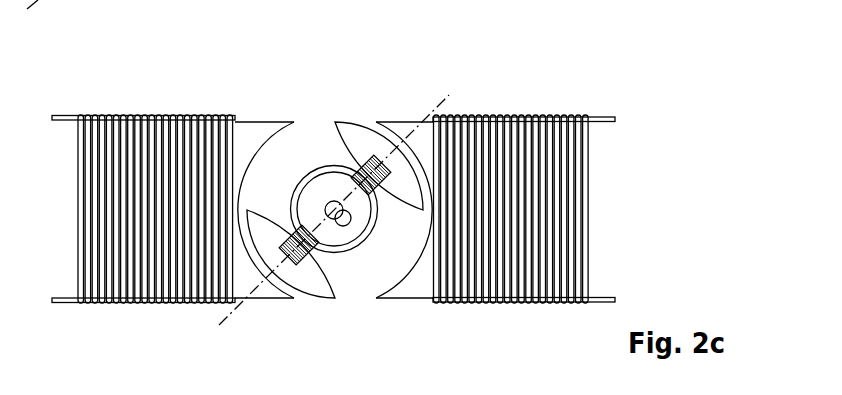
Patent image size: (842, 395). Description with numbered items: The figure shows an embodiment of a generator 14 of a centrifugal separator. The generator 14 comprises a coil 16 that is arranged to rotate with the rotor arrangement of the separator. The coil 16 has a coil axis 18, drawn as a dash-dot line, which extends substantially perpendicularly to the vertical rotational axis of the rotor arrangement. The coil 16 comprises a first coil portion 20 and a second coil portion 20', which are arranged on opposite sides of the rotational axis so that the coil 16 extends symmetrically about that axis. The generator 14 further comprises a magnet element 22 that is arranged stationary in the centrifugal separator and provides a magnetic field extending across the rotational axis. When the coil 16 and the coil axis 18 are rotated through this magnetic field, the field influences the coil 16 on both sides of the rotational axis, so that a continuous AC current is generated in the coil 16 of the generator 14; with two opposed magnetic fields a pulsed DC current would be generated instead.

The generator 14 is at (355, 304).
The coil 16 is at (273, 215).
The coil axis 18 is at (438, 108).
The first coil portion 20 is at (327, 252).
The second coil portion 20' is at (383, 204).
The magnet element 22 is at (248, 105).